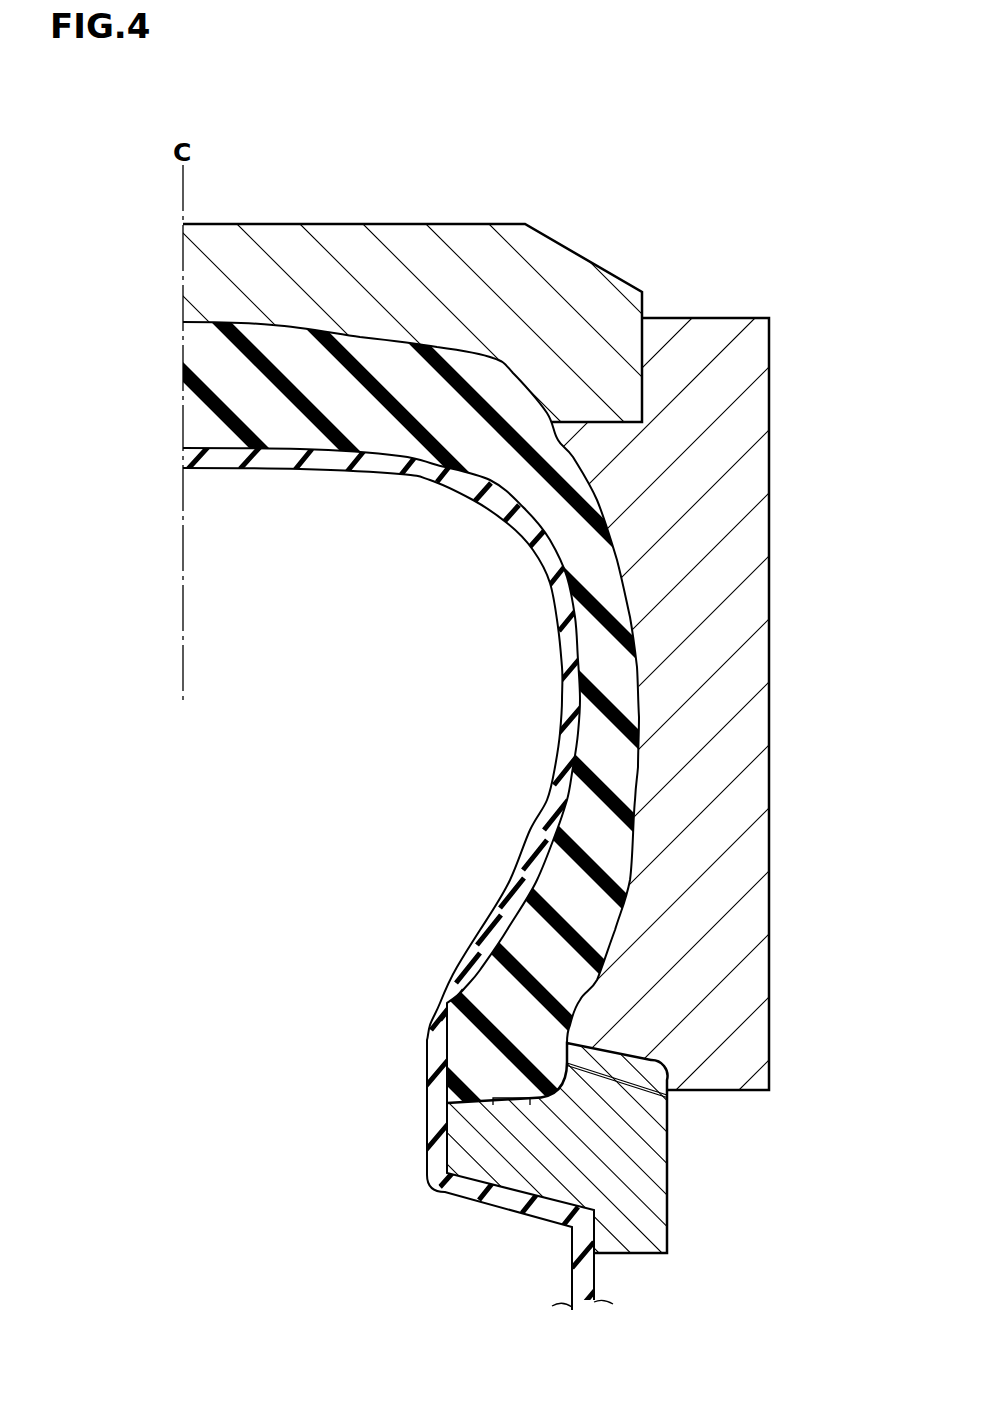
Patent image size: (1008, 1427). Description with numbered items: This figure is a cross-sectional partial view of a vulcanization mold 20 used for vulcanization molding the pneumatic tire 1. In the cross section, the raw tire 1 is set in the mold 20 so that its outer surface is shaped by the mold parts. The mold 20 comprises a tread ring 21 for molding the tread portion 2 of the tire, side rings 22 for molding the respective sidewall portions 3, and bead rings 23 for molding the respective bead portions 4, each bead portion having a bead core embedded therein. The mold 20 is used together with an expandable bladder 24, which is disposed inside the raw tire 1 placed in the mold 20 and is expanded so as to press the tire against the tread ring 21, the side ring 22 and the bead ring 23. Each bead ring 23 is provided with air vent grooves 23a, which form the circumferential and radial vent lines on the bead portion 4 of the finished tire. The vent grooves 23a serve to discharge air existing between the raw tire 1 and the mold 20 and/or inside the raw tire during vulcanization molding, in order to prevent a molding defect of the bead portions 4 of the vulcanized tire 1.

The tire 1 is at (600, 497).
The tread portion 2 is at (288, 317).
The sidewall portion 3 is at (652, 788).
The bead portion 4 is at (540, 850).
The mold 20 is at (690, 182).
The tread ring 21 is at (363, 253).
The side ring 22 is at (735, 620).
The bead ring 23 is at (635, 1175).
The air vent groove 23a is at (566, 1060).
The bladder 24 is at (325, 457).